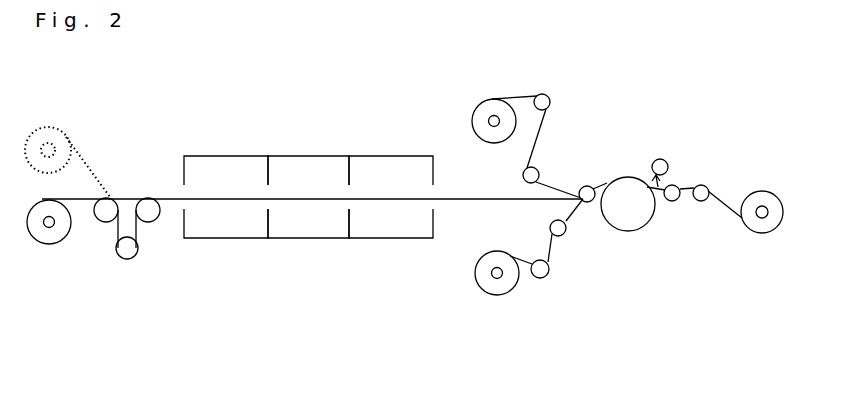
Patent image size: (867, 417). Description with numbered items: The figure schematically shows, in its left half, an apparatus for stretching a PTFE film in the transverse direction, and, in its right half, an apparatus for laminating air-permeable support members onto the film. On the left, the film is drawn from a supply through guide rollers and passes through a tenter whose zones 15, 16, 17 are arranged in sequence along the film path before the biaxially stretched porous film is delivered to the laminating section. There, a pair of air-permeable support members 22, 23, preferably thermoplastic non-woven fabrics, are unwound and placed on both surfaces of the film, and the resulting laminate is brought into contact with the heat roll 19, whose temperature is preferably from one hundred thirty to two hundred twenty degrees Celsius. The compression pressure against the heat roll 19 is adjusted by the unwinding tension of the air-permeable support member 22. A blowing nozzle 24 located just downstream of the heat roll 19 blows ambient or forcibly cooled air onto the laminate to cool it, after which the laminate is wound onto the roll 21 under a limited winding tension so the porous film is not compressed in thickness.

The first heating zone 15 is at (203, 220).
The second heating zone 16 is at (308, 222).
The third heating zone 17 is at (400, 222).
The heat roll 19 is at (630, 210).
The roll 21 is at (760, 228).
The air-permeable support member 22 is at (525, 98).
The air-permeable support member 23 is at (521, 273).
The blowing nozzle 24 is at (663, 160).